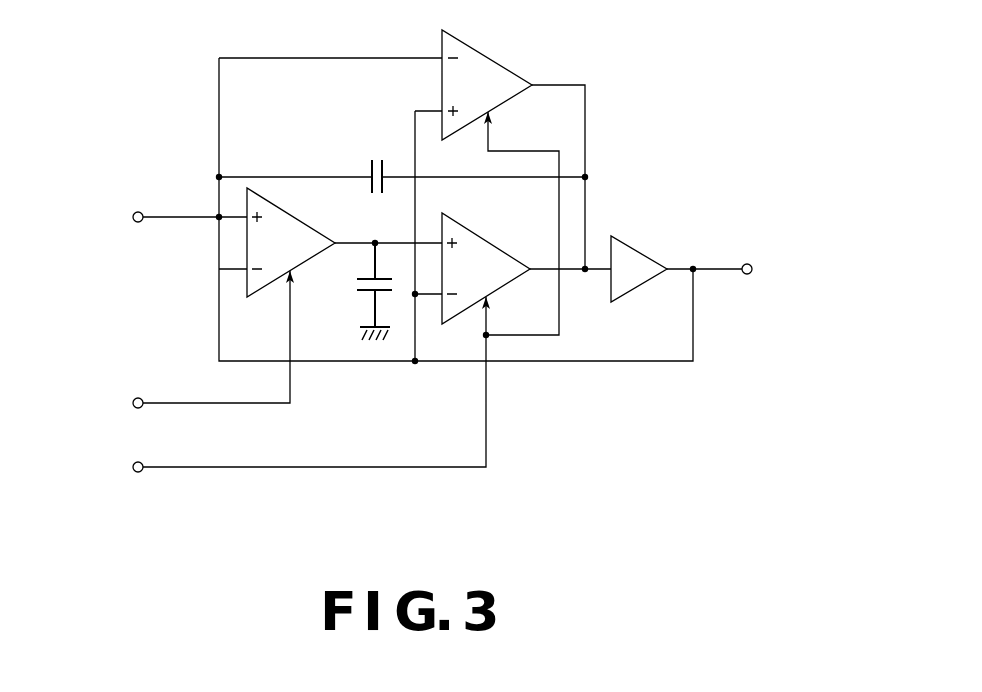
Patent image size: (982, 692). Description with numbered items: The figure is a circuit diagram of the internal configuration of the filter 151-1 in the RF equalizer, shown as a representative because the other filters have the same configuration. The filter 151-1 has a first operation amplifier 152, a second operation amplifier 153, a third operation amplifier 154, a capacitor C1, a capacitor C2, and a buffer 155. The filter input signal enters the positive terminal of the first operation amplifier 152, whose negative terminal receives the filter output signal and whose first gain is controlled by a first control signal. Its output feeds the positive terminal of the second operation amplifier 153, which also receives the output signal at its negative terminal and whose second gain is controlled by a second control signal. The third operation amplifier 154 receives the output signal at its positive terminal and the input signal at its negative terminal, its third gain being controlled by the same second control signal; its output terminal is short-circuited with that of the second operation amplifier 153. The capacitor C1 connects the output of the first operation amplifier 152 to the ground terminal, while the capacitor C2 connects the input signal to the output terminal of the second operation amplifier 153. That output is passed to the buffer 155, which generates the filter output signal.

The filter 151-1 is at (439, 278).
The first operation amplifier 152 is at (286, 211).
The second operation amplifier 153 is at (476, 233).
The third operation amplifier 154 is at (491, 58).
The buffer 155 is at (634, 249).
The capacitor C1 is at (357, 286).
The capacitor C2 is at (372, 159).